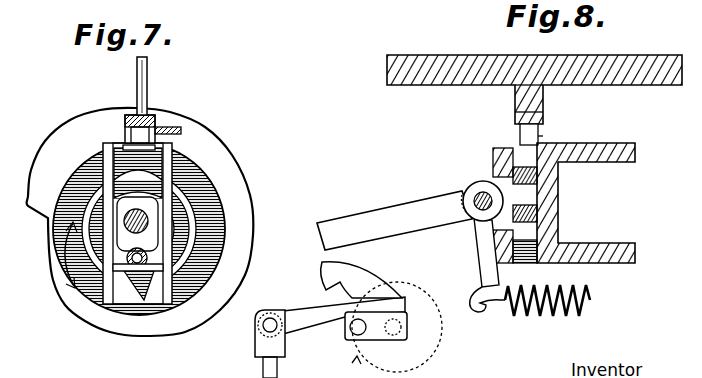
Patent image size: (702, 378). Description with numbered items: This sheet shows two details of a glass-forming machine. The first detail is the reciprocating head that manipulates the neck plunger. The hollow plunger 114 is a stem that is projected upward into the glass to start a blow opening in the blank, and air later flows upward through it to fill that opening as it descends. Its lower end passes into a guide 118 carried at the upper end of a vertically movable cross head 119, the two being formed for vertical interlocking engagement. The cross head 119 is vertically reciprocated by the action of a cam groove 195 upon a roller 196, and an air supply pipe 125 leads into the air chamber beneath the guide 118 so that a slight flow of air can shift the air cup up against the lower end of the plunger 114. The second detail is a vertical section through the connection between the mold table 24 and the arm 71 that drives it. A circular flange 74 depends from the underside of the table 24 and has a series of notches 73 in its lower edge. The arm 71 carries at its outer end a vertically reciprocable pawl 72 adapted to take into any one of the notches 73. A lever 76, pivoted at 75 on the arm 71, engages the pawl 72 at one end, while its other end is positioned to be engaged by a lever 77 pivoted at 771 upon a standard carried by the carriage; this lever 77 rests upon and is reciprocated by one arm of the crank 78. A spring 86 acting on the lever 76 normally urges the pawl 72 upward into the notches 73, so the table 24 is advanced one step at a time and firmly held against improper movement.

In FIG. 7, the hollow plunger 114 is at (137, 96).
In FIG. 7, the guide 118 is at (151, 122).
In FIG. 7, the air supply pipe 125 is at (182, 131).
In FIG. 7, the cross head 119 is at (198, 163).
In FIG. 7, the cam groove 195 is at (208, 214).
In FIG. 7, the roller 196 is at (152, 306).
In FIG. 8, the mold table 24 is at (387, 72).
In FIG. 8, the circular flange 74 is at (515, 110).
In FIG. 8, the notches 73 is at (544, 134).
In FIG. 8, the arm 71 is at (598, 165).
In FIG. 8, the pawl 72 is at (494, 156).
In FIG. 8, the lever 76 is at (401, 213).
In FIG. 8, the pivot 75 is at (479, 197).
In FIG. 8, the spring 86 is at (522, 320).
In FIG. 8, the lever 77 is at (304, 305).
In FIG. 8, the pivot 771 is at (258, 334).
In FIG. 8, the crank 78 is at (354, 340).